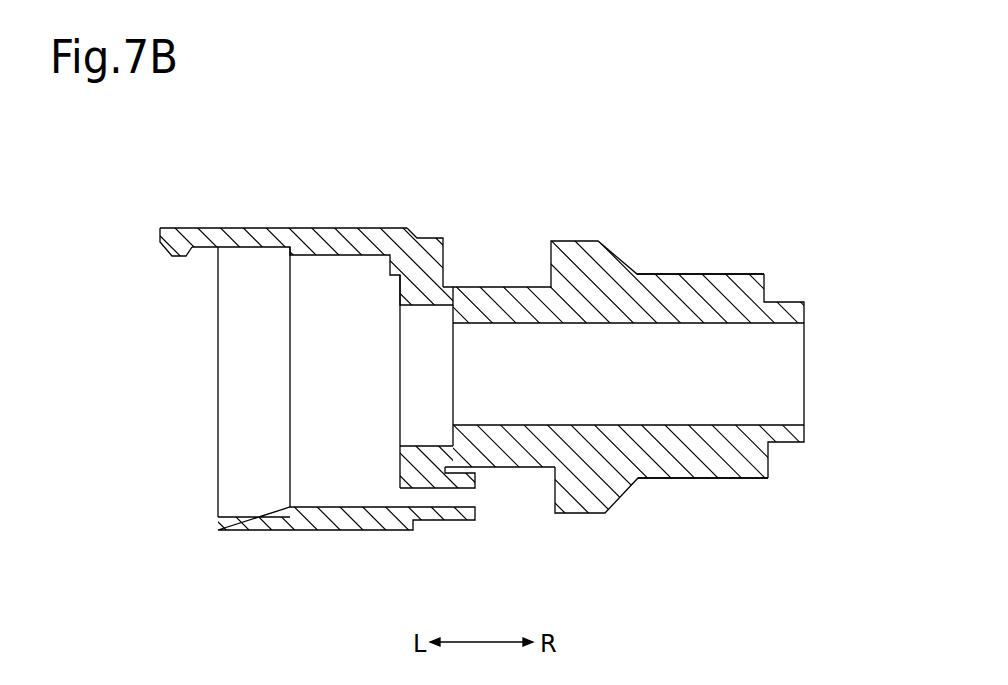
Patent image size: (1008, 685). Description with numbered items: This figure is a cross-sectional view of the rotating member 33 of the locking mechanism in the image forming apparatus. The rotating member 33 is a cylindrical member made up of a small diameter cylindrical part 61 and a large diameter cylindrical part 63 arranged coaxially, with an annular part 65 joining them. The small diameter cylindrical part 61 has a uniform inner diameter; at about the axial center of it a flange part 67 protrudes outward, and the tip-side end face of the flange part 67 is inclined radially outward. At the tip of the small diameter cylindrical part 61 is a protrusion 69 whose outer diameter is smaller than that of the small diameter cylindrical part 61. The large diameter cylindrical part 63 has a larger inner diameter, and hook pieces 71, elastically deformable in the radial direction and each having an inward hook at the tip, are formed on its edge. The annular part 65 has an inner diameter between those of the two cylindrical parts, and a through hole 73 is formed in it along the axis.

The rotating member 33 is at (582, 356).
The small diameter cylindrical part 61 is at (691, 288).
The large diameter cylindrical part 63 is at (391, 359).
The annular part 65 is at (432, 263).
The flange part 67 is at (585, 500).
The protrusion 69 is at (793, 310).
The hook piece 71 is at (199, 236).
The through hole 73 is at (446, 497).